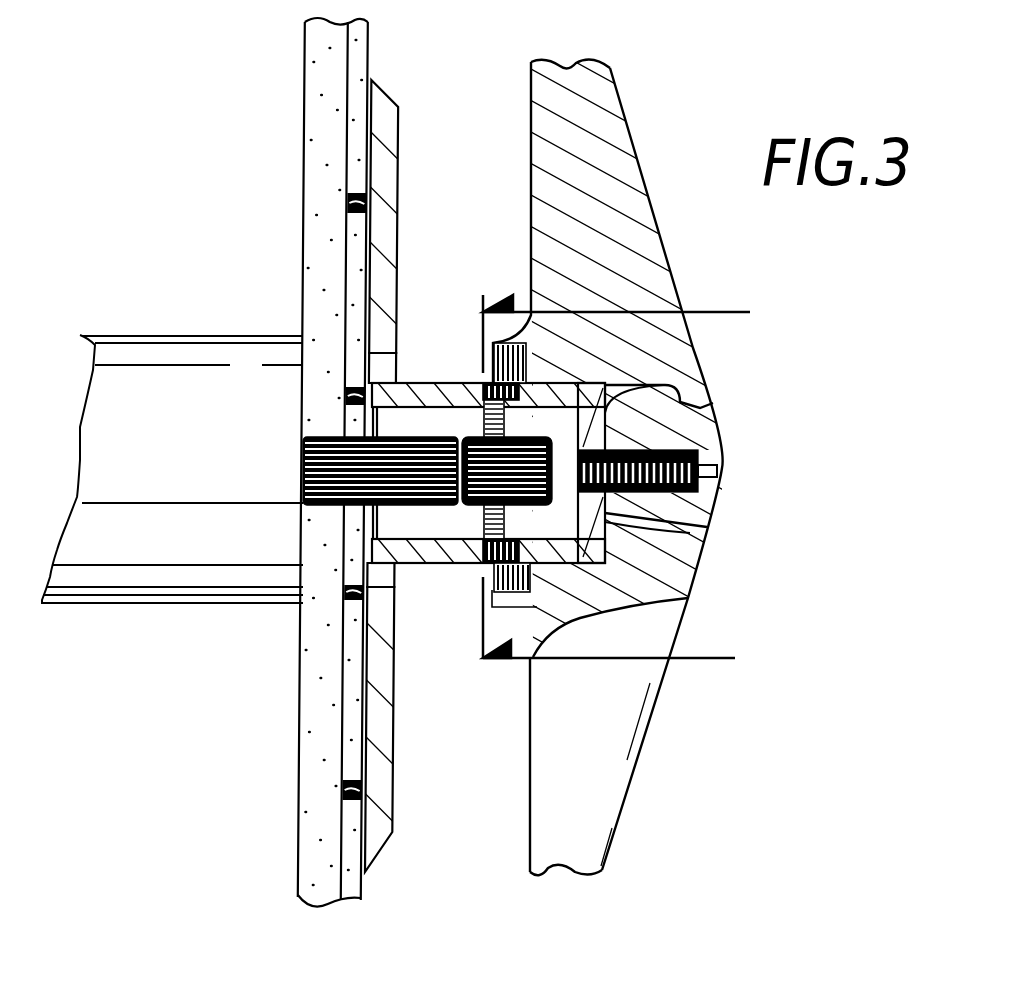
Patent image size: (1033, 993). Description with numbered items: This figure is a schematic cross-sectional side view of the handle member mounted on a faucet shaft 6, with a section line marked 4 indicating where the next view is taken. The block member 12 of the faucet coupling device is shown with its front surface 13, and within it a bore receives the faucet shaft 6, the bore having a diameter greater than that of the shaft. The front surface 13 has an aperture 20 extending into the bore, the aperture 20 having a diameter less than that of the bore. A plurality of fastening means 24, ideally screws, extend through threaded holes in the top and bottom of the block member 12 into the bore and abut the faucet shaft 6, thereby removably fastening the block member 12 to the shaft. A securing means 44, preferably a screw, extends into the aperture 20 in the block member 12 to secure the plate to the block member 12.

The section line 4- 4 is at (633, 487).
The faucet shaft 6 is at (303, 503).
The block member 12 is at (434, 562).
The front surface 13 is at (705, 410).
The aperture 20 is at (693, 533).
The fastening means 24 is at (537, 577).
The securing means 44 is at (708, 455).